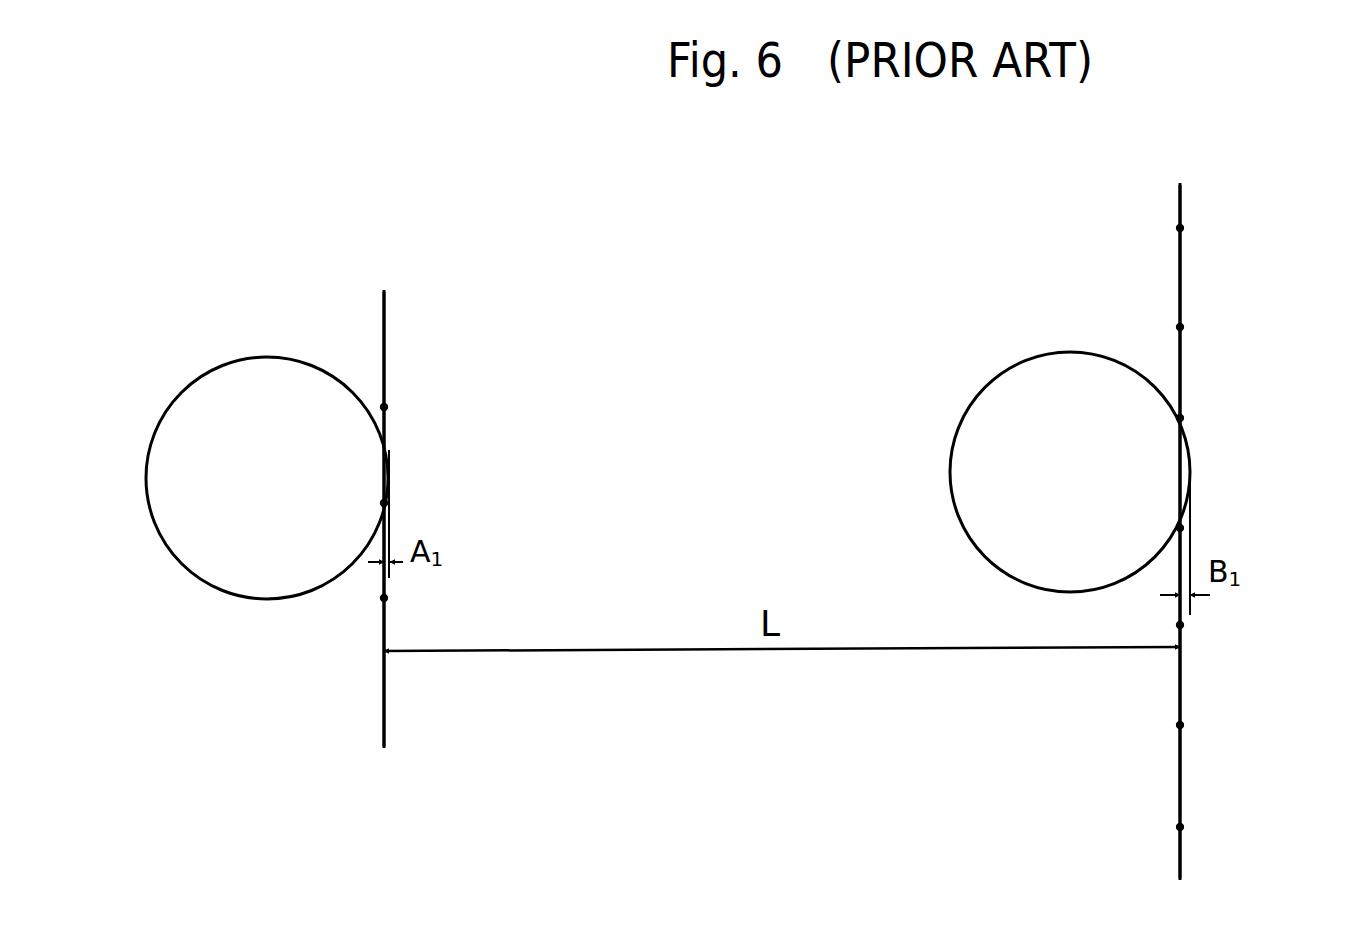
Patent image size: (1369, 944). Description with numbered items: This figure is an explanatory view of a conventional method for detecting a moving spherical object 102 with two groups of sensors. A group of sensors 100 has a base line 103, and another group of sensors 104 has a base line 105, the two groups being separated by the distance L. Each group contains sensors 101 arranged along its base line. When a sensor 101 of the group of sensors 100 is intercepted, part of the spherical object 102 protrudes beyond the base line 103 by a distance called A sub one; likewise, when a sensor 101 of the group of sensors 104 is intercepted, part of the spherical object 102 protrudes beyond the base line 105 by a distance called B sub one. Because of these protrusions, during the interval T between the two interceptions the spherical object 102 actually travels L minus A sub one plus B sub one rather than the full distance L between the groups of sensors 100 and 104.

The group of sensors 100 is at (388, 378).
The sensor 101 is at (384, 312).
The spherical object 102 is at (267, 603).
The base line 103 is at (384, 335).
The group of sensors 104 is at (1184, 326).
The base line 105 is at (1180, 250).